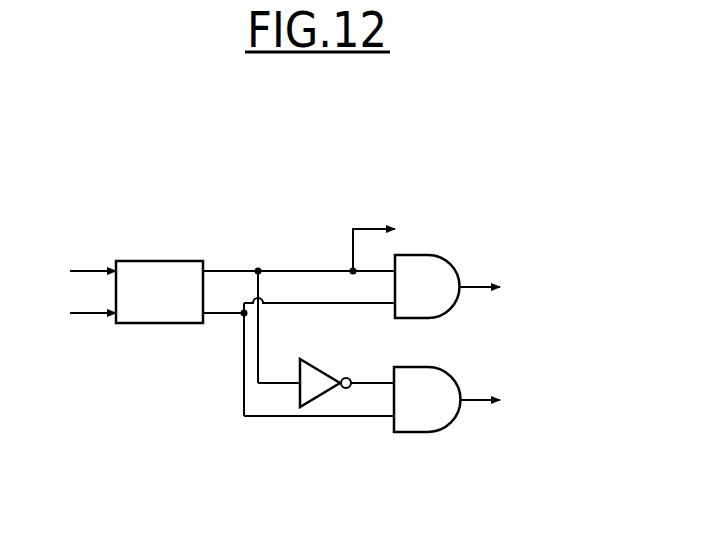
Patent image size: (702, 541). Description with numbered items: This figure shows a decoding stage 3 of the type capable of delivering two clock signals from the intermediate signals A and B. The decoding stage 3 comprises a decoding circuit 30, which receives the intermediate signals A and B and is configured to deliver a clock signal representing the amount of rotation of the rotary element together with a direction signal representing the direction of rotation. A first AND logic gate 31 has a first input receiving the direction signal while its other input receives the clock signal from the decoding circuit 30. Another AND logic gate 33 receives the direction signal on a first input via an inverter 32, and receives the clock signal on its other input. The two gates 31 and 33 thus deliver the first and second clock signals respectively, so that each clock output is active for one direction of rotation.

The decoding stage 3 is at (321, 178).
The decoding circuit 30 is at (159, 292).
The first AND logic gate 31 is at (452, 260).
The inverter 32 is at (317, 368).
The AND logic gate 33 is at (452, 373).